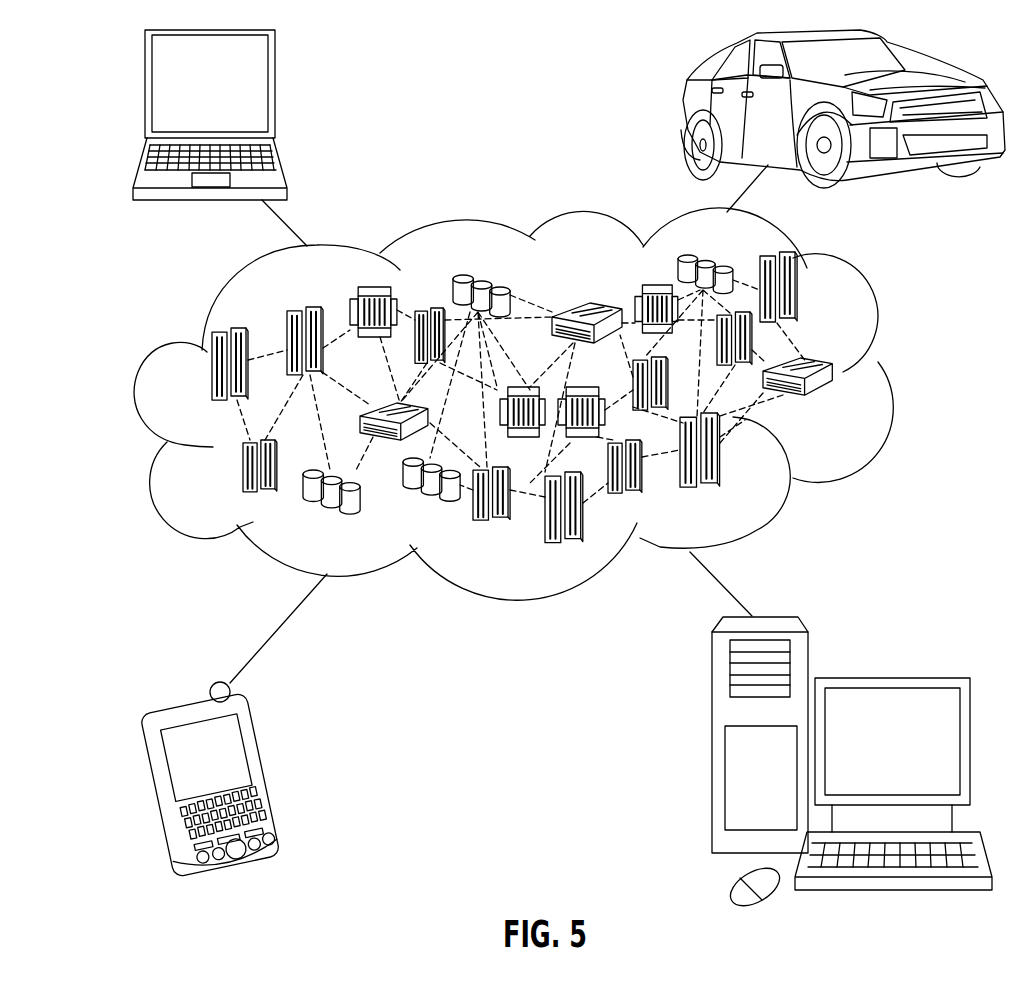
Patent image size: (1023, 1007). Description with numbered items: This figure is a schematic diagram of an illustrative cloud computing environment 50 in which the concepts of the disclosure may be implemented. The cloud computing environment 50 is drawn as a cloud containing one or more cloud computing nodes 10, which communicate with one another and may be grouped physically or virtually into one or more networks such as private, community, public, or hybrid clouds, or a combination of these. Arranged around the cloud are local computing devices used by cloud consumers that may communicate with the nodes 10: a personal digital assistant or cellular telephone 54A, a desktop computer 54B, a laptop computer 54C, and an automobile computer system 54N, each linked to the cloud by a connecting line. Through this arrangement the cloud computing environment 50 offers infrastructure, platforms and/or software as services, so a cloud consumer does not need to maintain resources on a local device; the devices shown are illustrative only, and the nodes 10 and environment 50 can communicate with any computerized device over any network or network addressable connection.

The cloud computing nodes 10 is at (836, 411).
The cloud computing environment 50 is at (890, 376).
The personal digital assistant (PDA) or cellular telephone 54A is at (267, 771).
The desktop computer 54B is at (888, 676).
The laptop computer 54C is at (275, 90).
The automobile computer system 54N is at (683, 108).